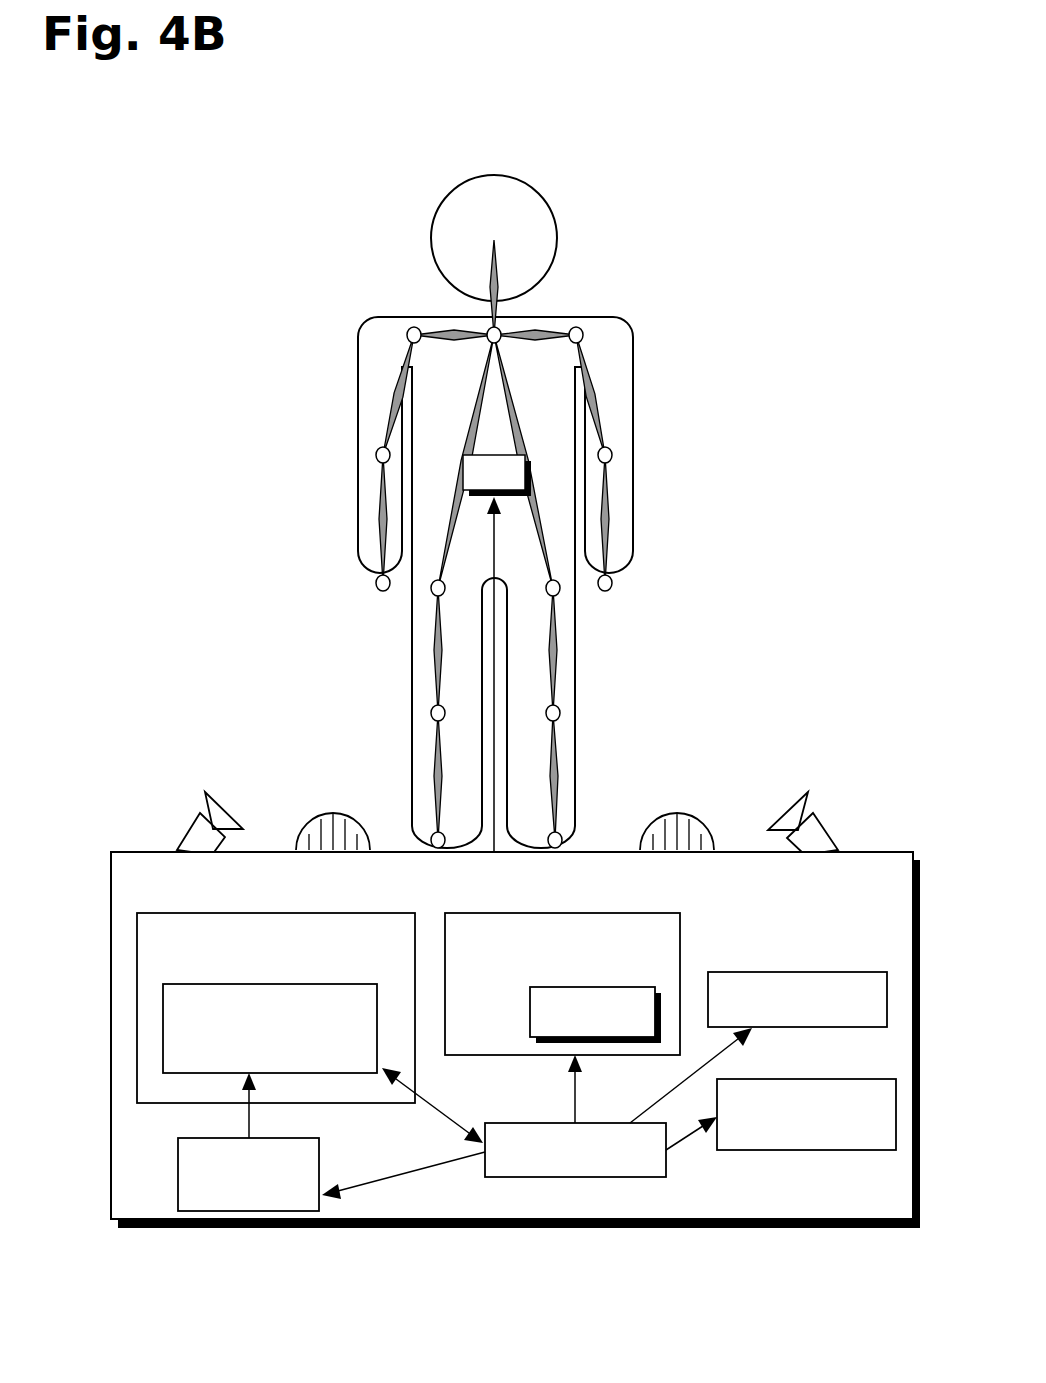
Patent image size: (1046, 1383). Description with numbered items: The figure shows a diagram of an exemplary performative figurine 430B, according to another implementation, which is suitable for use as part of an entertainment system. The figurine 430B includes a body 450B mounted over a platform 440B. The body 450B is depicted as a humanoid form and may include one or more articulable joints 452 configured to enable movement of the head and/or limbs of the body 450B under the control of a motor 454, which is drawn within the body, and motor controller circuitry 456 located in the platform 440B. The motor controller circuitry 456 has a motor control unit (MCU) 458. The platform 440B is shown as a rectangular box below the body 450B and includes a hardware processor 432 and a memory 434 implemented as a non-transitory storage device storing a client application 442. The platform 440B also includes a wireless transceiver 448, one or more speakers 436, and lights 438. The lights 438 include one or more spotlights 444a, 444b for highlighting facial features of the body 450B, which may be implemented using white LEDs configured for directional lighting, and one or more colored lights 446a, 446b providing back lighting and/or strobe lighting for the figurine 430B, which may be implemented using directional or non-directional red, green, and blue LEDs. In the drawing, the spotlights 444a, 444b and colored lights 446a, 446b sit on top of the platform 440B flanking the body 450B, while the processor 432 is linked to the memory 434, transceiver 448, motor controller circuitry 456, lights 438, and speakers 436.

The performative figurine 430B is at (770, 162).
The body 450B is at (358, 452).
The articulable joint(s) 452 is at (612, 460).
The motor 454 is at (497, 684).
The spotlight 444a is at (197, 812).
The spotlight 444b is at (830, 828).
The colored light 446a is at (333, 813).
The colored light 446b is at (677, 813).
The platform 440B is at (111, 1022).
The memory 434 is at (276, 1008).
The client application 442 is at (270, 1028).
The wireless transceiver 448 is at (248, 1142).
The motor controller circuitry 456 is at (562, 984).
The motor control unit (MCU) 458 is at (595, 1015).
The hardware processor 432 is at (537, 1113).
The lights 438 is at (797, 999).
The speaker(s) 436 is at (806, 1114).